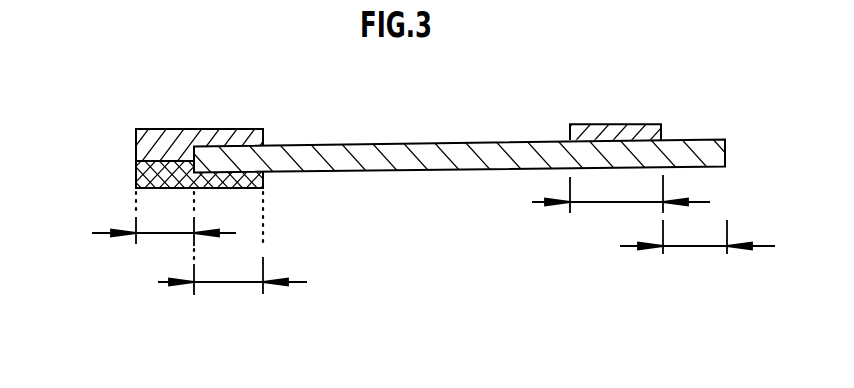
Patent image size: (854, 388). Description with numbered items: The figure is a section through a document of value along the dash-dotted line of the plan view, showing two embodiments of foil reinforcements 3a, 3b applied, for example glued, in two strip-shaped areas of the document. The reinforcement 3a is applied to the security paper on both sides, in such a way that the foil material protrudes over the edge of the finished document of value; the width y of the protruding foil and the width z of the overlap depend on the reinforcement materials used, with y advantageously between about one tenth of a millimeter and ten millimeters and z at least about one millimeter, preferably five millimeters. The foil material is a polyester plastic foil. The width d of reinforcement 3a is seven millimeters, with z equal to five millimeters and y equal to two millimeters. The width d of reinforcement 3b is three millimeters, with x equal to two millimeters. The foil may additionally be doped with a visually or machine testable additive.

The reinforcement 3a is at (172, 140).
The reinforcement 3b is at (634, 138).
The width of the protruding foil y is at (164, 222).
The width of the overlap z is at (232, 274).
The width of reinforcement d is at (621, 194).
The distance x is at (697, 235).